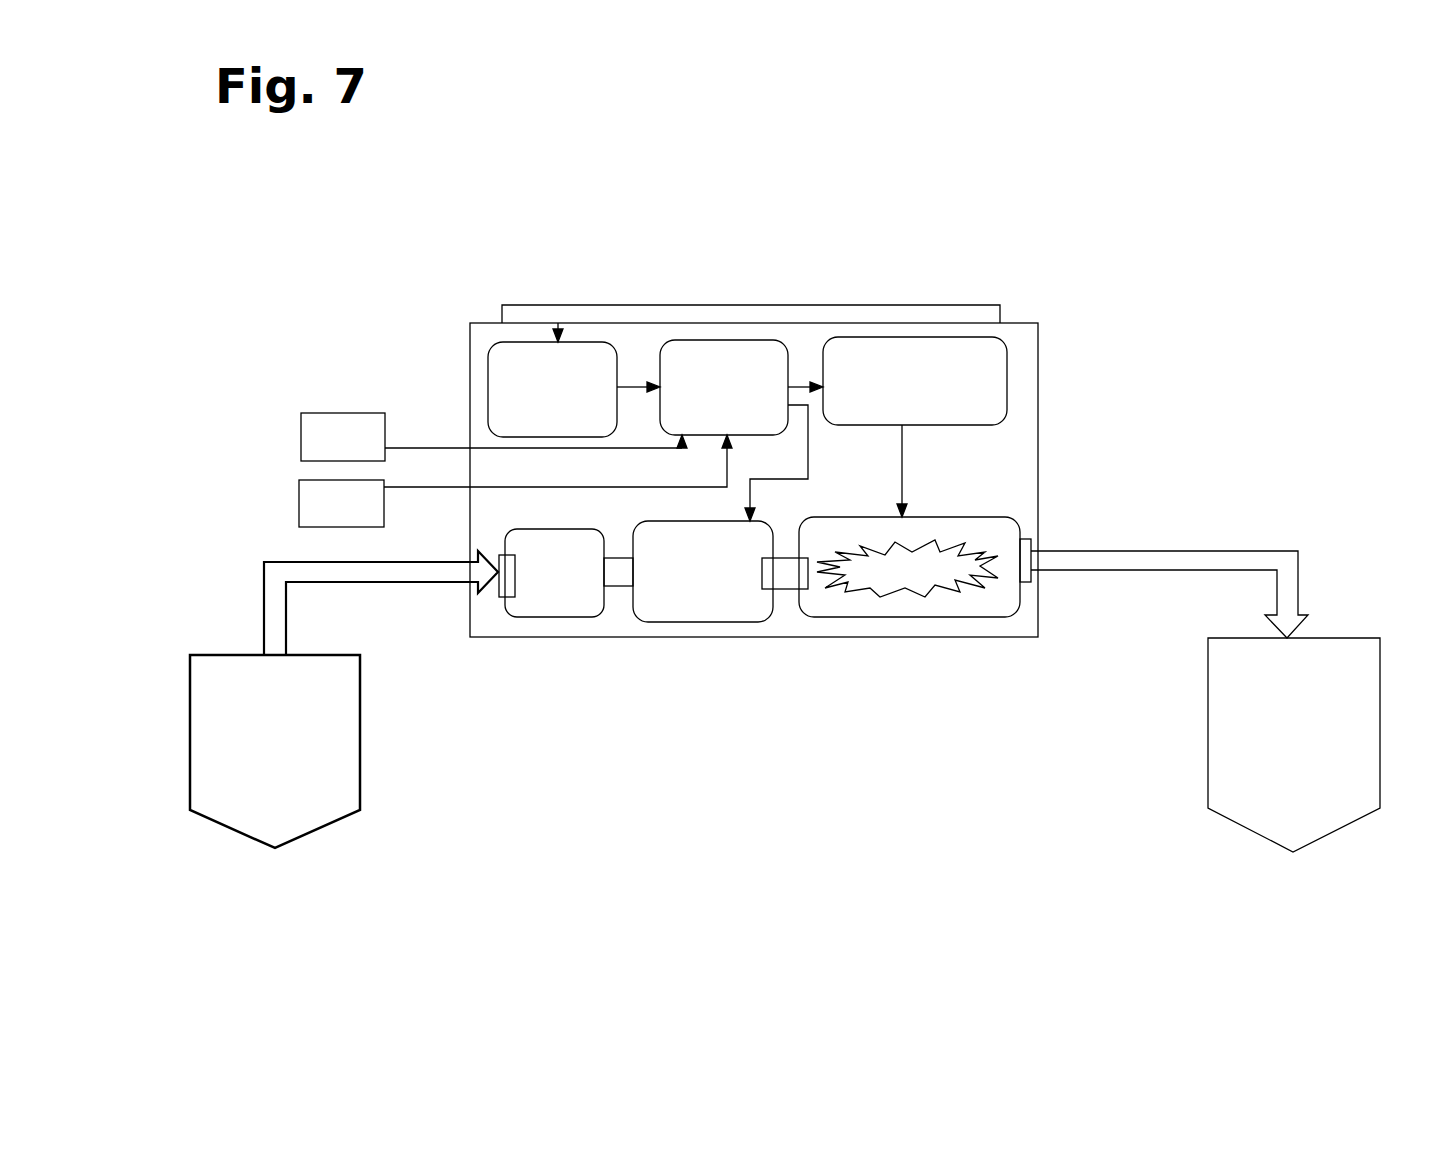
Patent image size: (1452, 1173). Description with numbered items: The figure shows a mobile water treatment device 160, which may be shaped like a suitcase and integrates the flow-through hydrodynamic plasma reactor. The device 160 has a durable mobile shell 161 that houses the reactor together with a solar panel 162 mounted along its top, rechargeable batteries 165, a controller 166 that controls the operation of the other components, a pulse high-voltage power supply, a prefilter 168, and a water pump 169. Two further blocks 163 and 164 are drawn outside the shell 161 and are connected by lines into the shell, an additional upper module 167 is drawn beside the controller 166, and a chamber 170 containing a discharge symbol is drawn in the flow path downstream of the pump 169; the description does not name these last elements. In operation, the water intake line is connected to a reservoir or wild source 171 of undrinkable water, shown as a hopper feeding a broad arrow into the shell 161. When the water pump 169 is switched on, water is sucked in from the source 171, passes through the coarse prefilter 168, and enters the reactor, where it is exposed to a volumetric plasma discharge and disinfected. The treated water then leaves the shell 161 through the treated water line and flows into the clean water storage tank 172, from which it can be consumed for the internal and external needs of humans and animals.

The mobile water treatment device 160 is at (315, 154).
The durable mobile shell 161 is at (613, 652).
The solar panel 162 is at (984, 298).
The power source 163 is at (289, 454).
The controller 164 is at (286, 511).
The rechargeable batteries 165 is at (500, 367).
The controller 166 is at (717, 357).
The output module 167 is at (997, 351).
The prefilter 168 is at (542, 609).
The water pump 169 is at (720, 611).
The sensing chamber 170 is at (1000, 524).
The source of undrinkable water 171 is at (329, 838).
The clean water storage tank 172 is at (1234, 834).